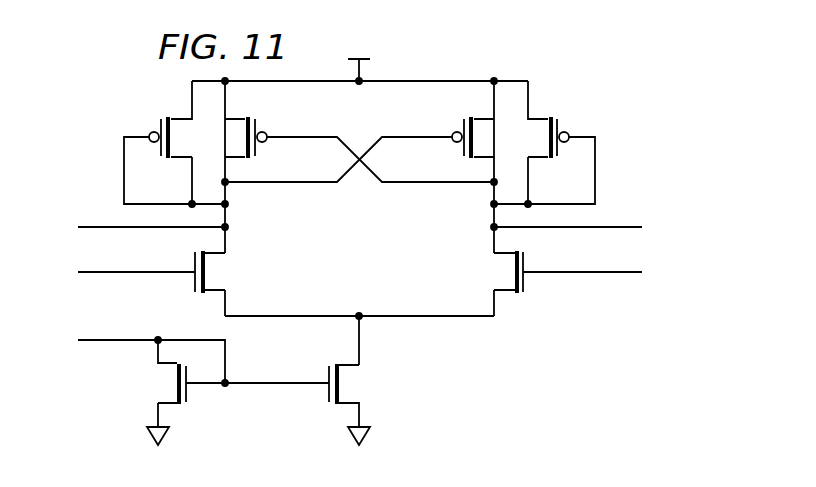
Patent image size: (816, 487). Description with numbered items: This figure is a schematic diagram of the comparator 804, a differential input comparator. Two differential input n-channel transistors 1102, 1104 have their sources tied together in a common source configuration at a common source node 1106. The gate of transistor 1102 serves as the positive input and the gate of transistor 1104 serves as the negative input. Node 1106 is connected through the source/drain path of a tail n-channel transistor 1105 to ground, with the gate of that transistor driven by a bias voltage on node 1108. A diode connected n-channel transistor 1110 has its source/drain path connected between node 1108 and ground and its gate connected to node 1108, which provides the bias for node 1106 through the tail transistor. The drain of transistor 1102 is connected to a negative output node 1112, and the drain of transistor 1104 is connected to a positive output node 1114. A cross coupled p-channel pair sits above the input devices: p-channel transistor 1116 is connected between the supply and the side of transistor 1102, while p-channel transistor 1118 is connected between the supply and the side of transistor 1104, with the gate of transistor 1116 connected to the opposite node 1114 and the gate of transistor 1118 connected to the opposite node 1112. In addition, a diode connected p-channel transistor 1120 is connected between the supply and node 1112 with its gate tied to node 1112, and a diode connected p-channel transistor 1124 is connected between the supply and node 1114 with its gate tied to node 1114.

The comparator 804 is at (556, 71).
The differential input n-channel transistor 1102 is at (194, 283).
The differential input n-channel transistor 1104 is at (524, 283).
The tail current source transistor 1105 is at (328, 370).
The common source node 1106 is at (364, 320).
The bias voltage node 1108 is at (118, 343).
The diode connected n-channel transistor 1110 is at (188, 397).
The negative output node 1112 is at (103, 225).
The positive output node 1114 is at (617, 226).
The p-channel transistor 1116 is at (258, 122).
The p-channel transistor 1118 is at (461, 122).
The diode connected p-channel transistor 1120 is at (158, 122).
The diode connected p-channel transistor 1124 is at (561, 122).